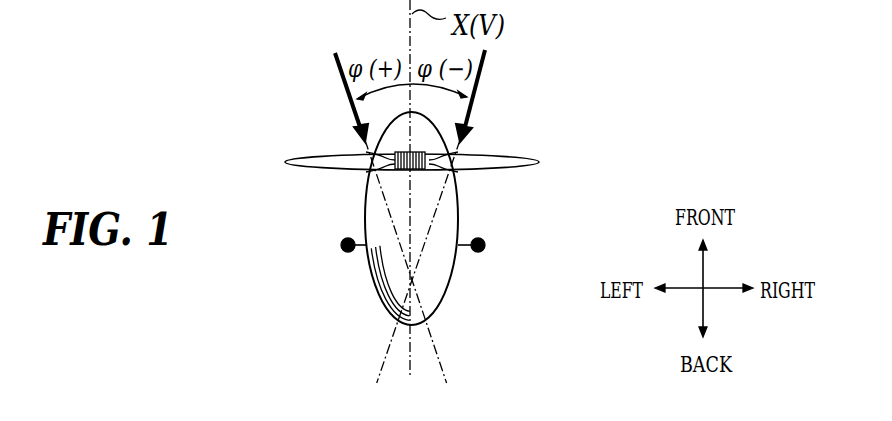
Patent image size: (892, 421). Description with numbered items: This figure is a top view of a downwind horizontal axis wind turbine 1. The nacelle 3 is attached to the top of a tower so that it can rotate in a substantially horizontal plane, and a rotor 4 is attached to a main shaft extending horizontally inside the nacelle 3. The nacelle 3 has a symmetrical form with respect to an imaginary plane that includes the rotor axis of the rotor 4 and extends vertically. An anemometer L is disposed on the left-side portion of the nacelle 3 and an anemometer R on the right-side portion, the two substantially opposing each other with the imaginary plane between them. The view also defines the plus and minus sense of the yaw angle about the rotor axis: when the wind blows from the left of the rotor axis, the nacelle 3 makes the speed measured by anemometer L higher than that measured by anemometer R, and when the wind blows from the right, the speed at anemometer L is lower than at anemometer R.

The horizontal axis wind turbine 1 is at (414, 240).
The nacelle 3 is at (452, 202).
The rotor 4 is at (315, 166).
The anemometer L is at (341, 247).
The anemometer R is at (485, 247).